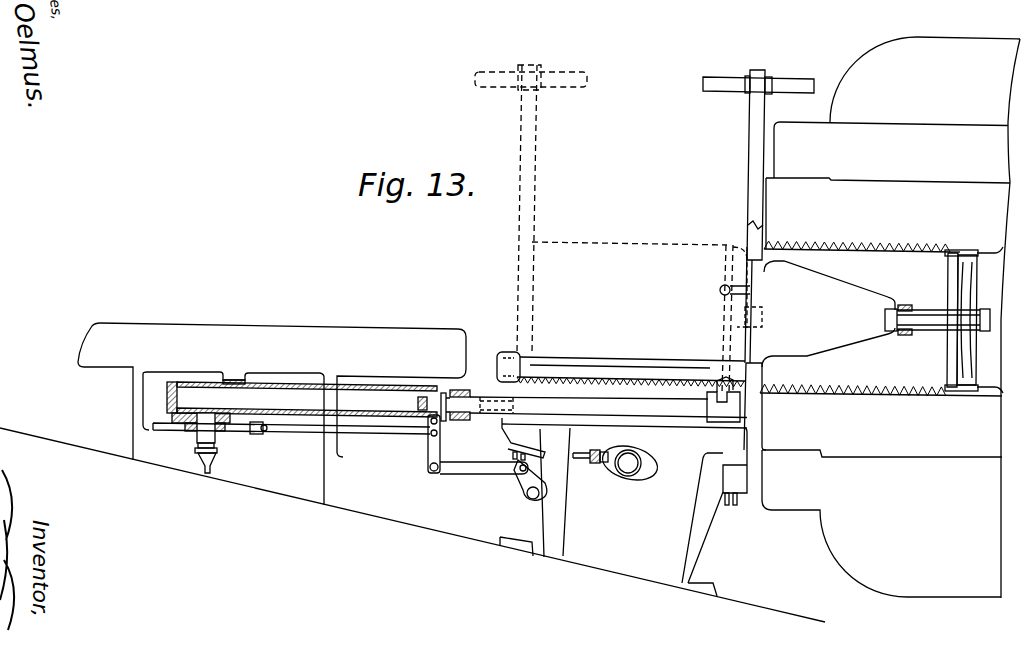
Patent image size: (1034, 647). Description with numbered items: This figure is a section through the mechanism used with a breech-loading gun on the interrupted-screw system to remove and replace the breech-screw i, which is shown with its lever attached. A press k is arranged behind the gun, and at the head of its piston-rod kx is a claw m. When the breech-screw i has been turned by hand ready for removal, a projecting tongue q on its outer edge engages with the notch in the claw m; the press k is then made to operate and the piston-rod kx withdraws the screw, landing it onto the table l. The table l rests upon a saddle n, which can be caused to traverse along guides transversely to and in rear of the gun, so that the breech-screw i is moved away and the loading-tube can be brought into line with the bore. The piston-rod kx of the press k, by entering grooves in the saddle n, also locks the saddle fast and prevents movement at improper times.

The press k is at (295, 427).
The piston-rod kx is at (608, 403).
The table l is at (618, 229).
The breech-screw i is at (881, 318).
The claw m is at (723, 407).
The projecting tongue q is at (725, 387).
The saddle n is at (623, 506).